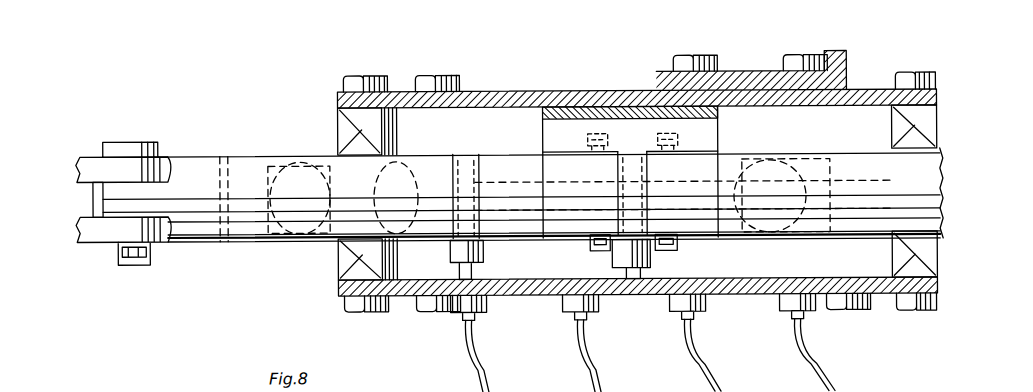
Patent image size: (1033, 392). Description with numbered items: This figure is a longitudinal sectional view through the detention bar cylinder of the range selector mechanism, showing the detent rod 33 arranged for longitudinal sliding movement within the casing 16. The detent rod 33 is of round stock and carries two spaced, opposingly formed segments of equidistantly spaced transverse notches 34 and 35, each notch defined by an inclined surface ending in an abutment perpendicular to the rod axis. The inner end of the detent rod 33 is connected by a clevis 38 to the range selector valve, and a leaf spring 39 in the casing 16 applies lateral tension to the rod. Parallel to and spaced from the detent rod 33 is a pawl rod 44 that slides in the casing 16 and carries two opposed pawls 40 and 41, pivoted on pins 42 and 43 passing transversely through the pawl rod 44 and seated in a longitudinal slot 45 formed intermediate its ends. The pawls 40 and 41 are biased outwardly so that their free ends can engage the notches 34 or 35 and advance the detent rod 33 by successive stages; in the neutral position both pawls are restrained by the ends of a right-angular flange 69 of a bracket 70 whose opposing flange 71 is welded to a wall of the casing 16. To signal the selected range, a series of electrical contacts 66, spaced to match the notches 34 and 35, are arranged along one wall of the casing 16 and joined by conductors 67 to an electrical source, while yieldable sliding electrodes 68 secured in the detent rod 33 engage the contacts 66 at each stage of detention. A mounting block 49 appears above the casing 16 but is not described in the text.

The casing 16 is at (565, 95).
The detent rod 33 is at (190, 170).
The transverse notches 34 is at (326, 150).
The transverse notches 35 is at (759, 139).
The clevis 38 is at (106, 232).
The leaf spring 39 is at (860, 123).
The pawl 40 is at (586, 180).
The pawl 41 is at (683, 172).
The pin 42 is at (588, 145).
The pin 43 is at (658, 145).
The pawl rod 44 is at (216, 243).
The longitudinal slot 45 is at (512, 142).
The mounting block 49 is at (741, 72).
The electrical contacts 66 is at (580, 278).
The conductors 67 is at (468, 358).
The sliding electrodes 68 is at (458, 269).
The right-angular flange 69 is at (705, 137).
The bracket 70 is at (539, 130).
The flange 71 is at (607, 104).